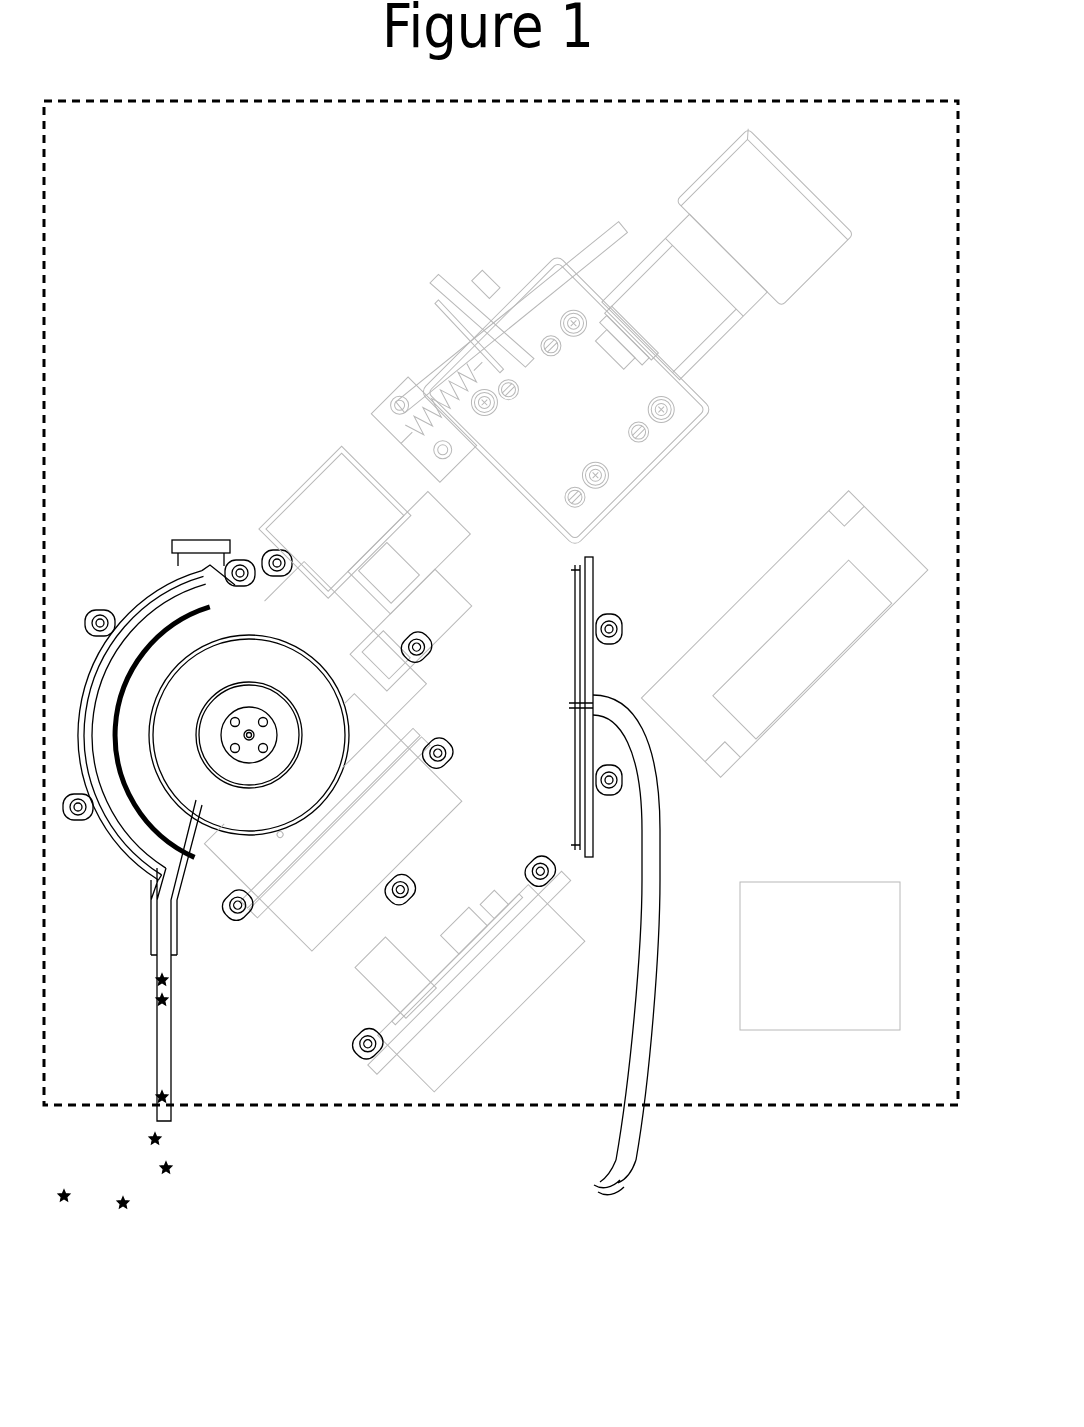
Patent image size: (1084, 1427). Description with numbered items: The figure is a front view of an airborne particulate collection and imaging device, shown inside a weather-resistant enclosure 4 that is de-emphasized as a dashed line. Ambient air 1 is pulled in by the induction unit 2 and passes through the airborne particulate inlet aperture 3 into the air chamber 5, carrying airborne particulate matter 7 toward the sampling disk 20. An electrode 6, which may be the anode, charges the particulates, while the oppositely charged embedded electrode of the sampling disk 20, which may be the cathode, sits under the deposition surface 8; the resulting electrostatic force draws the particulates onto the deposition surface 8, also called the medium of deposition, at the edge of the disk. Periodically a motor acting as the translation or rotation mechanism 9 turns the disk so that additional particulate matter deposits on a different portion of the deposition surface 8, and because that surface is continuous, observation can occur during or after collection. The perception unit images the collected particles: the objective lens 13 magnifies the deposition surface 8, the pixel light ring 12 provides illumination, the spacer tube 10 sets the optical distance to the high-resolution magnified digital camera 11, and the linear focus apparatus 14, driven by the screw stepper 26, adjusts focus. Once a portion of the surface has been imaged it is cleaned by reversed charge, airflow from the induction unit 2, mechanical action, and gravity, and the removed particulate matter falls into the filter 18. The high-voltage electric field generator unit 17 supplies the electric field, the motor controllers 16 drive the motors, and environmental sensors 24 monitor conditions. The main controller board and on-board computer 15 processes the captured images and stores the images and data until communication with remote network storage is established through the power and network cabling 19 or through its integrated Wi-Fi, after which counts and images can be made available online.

The ambient air 1 is at (93, 1228).
The induction unit 2 is at (308, 797).
The airborne particulate inlet aperture 3 is at (256, 1029).
The weather-resistant enclosure 4 is at (501, 658).
The air chamber 5 is at (136, 782).
The electrode 6 is at (131, 759).
The airborne particulate matter 7 is at (230, 1149).
The deposition surface 8 is at (205, 682).
The translation or rotation mechanism 9 is at (186, 559).
The spacer tube 10 is at (481, 385).
The high-resolution magnified digital camera 11 is at (651, 257).
The pixel light ring 12 is at (455, 630).
The objective lens 13 is at (443, 554).
The linear focus apparatus 14 is at (415, 304).
The main controller board and on-board computer 15 is at (656, 687).
The motor controllers 16 is at (786, 647).
The high-voltage electric field generator unit 17 is at (464, 964).
The filter 18 is at (389, 829).
The power and network cabling 19 is at (696, 963).
The sampling disk with embedded electrode 20 is at (243, 570).
The environmental sensors 24 is at (840, 988).
The screw stepper 26 is at (384, 465).